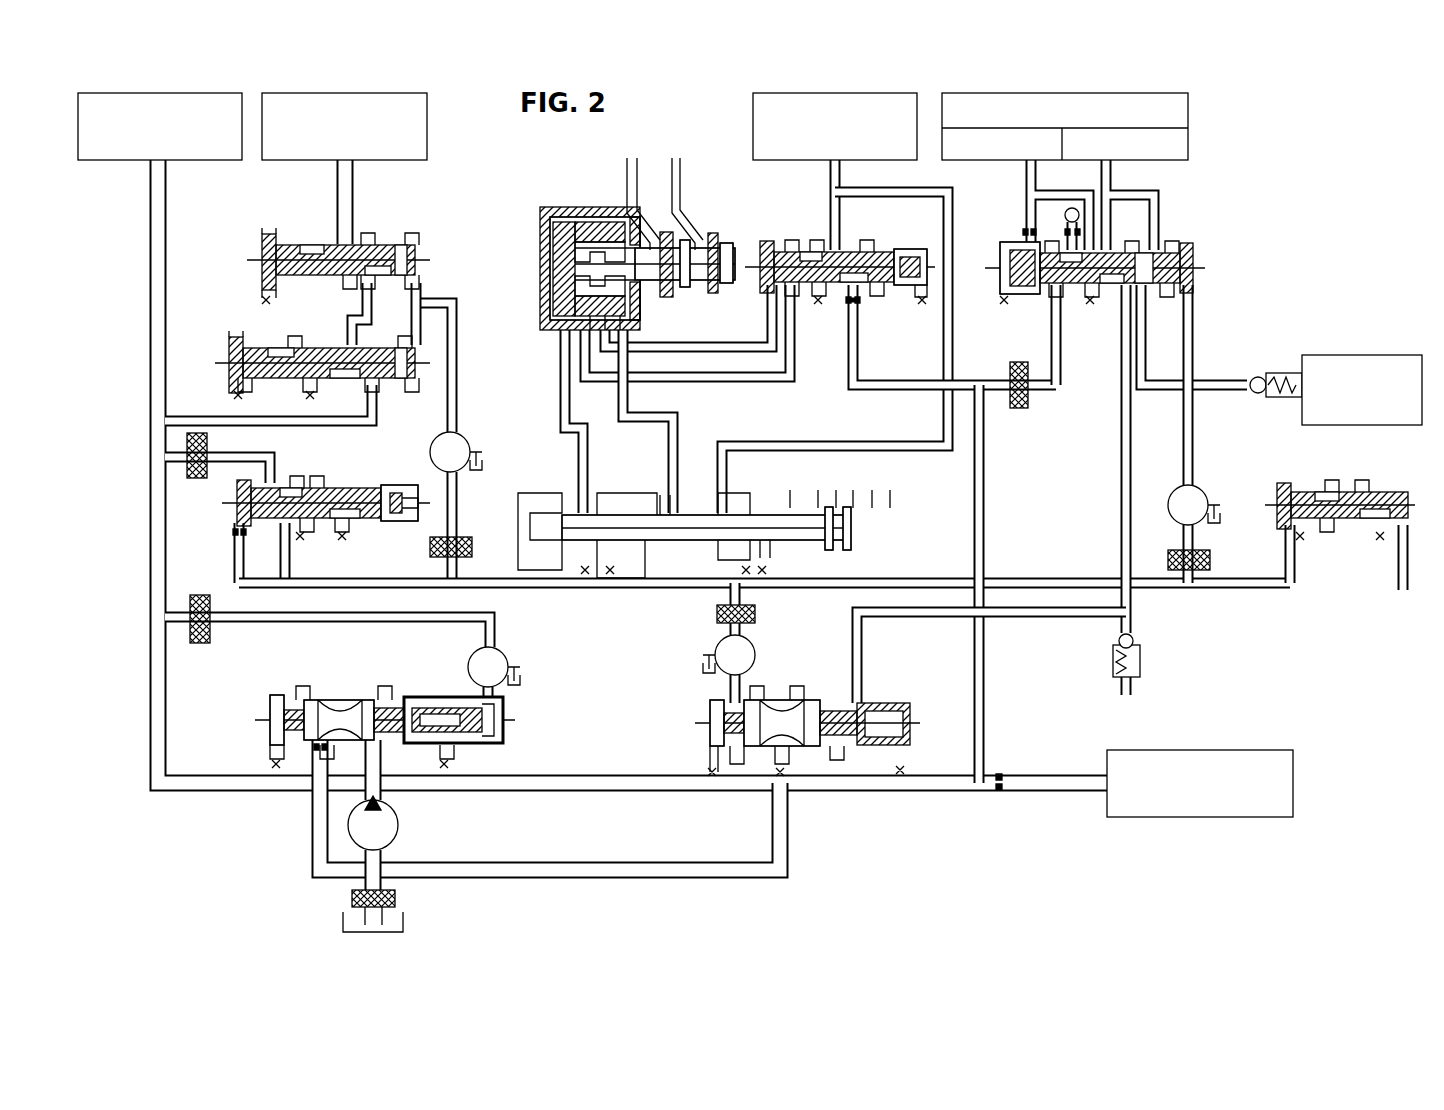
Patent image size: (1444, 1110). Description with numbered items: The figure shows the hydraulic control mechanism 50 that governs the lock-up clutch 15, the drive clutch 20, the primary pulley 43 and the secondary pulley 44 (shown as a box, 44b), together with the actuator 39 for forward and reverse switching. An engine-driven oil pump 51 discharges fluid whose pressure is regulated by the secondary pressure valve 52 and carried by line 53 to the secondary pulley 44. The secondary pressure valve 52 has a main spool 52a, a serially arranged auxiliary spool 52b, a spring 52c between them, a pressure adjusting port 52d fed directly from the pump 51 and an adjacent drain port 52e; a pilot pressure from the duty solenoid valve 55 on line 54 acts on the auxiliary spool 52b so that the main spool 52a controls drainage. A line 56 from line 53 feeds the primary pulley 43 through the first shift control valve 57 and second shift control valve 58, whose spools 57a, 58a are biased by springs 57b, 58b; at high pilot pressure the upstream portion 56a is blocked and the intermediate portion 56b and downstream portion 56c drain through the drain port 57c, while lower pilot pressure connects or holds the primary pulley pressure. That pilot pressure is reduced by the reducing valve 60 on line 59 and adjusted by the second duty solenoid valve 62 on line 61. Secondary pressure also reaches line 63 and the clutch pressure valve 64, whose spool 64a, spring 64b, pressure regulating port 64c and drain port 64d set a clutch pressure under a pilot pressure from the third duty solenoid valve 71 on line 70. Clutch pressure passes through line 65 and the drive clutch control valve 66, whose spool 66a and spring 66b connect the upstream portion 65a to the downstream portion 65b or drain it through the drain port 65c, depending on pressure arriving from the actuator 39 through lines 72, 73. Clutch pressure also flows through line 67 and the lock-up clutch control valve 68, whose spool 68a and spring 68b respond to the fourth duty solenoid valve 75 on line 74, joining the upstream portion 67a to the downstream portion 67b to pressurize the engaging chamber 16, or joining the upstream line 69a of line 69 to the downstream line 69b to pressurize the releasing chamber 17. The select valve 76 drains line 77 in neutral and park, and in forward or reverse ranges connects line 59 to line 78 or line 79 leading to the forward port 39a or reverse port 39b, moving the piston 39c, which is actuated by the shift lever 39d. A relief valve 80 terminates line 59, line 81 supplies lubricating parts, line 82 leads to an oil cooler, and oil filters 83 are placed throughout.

The lock-up clutch 15 is at (1190, 108).
The engaging chamber 16 is at (981, 162).
The releasing chamber 17 is at (1190, 146).
The drive clutch 20 is at (753, 122).
The actuator 39 is at (601, 227).
The forward port 39a is at (583, 215).
The reverse port 39b is at (540, 237).
The piston 39c is at (540, 291).
The select lever 39d is at (655, 210).
The primary pulley 43 is at (427, 140).
The secondary pulley 44 is at (112, 162).
The secondary pulley box 44b is at (160, 126).
The hydraulic control mechanism 50 is at (1263, 173).
The oil pump 51 is at (400, 843).
The secondary pressure valve 52 is at (385, 690).
The main spool 52a is at (335, 710).
The auxiliary spool 52b is at (458, 697).
The spring 52c is at (435, 703).
The pressure adjusting port 52d is at (375, 760).
The drain port 52e is at (330, 755).
The line 53 is at (165, 725).
The line 54 is at (442, 619).
The duty solenoid valve 55 is at (510, 650).
The line 56 is at (300, 428).
The upstream portion 56a is at (372, 423).
The intermediate portion 56b is at (375, 297).
The downstream portion 56c is at (356, 188).
The first shift control valve 57 is at (300, 348).
The spool 57a is at (300, 346).
The spring 57b is at (238, 346).
The drain port 57c is at (310, 384).
The second shift control valve 58 is at (306, 233).
The spool 58a is at (345, 235).
The spring 58b is at (264, 242).
The line 59 is at (372, 580).
The reducing valve 60 is at (361, 482).
The line 61 is at (458, 360).
The second duty solenoid valve 62 is at (470, 440).
The line 63 is at (602, 777).
The clutch pressure valve 64 is at (807, 717).
The spool 64a is at (795, 700).
The spring 64b is at (900, 732).
The pressure regulating port 64c is at (835, 765).
The drain port 64d is at (785, 770).
The line 65 is at (883, 386).
The upstream portion 65a is at (857, 308).
The downstream portion 65b is at (830, 200).
The drain port 65c is at (794, 310).
The drive clutch control valve 66 is at (827, 262).
The spool 66a is at (835, 245).
The spring 66b is at (887, 247).
The line 67 is at (1055, 390).
The upstream portion 67a is at (1050, 330).
The downstream portion 67b is at (1068, 212).
The lock-up clutch control valve 68 is at (1116, 264).
The spool 68a is at (1160, 245).
The spring 68b is at (1005, 250).
The line 69 is at (1122, 512).
The upstream line 69a is at (1120, 320).
The downstream line 69b is at (1110, 230).
The line 70 is at (705, 518).
The third duty solenoid valve 71 is at (715, 645).
The line 72 is at (715, 352).
The line 73 is at (780, 380).
The line 74 is at (1192, 433).
The fourth duty solenoid valve 75 is at (1195, 500).
The select valve 76 is at (636, 484).
The line 77 is at (925, 450).
The line 78 is at (675, 468).
The line 79 is at (563, 447).
The relief valve 80 is at (1338, 490).
The line 81 is at (1044, 777).
The line 82 is at (1217, 380).
The oil filter 83 is at (200, 480).